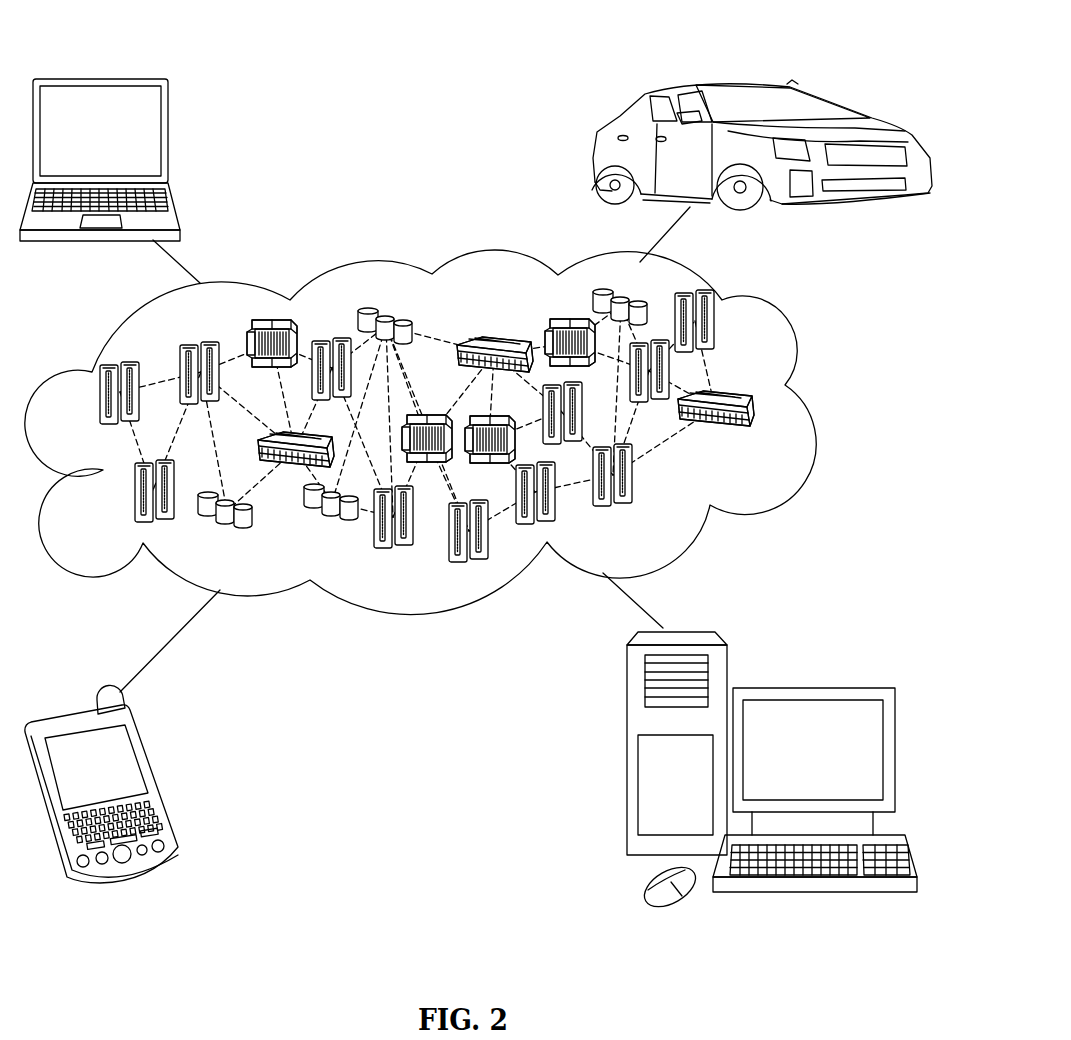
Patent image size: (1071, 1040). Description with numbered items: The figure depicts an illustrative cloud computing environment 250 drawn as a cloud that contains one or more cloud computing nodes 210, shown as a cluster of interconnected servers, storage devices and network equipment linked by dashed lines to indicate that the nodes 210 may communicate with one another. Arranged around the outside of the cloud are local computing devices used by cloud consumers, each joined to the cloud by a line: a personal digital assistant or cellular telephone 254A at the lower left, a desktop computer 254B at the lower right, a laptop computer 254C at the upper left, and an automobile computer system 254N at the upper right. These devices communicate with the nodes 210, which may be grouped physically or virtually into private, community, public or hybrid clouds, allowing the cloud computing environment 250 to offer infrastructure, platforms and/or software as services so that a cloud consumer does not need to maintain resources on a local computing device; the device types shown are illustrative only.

The cloud computing nodes 210 is at (762, 441).
The cloud computing environment 250 is at (810, 405).
The personal digital assistant (PDA) or cellular telephone 254A is at (158, 781).
The desktop computer 254B is at (810, 688).
The laptop computer 254C is at (170, 139).
The automobile computer system 254N is at (597, 152).